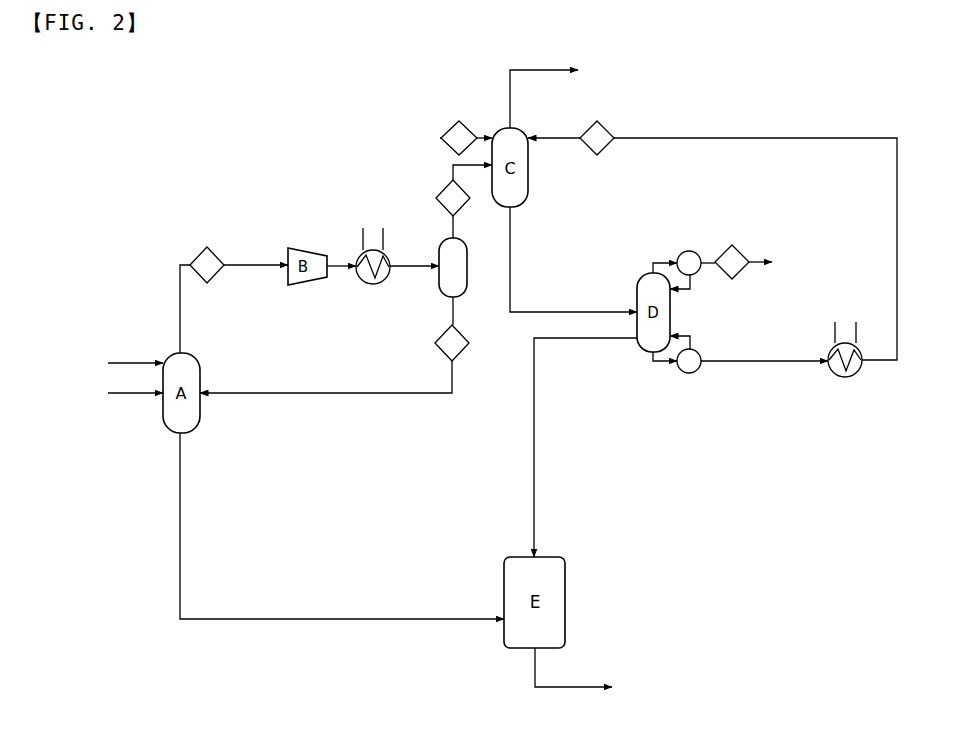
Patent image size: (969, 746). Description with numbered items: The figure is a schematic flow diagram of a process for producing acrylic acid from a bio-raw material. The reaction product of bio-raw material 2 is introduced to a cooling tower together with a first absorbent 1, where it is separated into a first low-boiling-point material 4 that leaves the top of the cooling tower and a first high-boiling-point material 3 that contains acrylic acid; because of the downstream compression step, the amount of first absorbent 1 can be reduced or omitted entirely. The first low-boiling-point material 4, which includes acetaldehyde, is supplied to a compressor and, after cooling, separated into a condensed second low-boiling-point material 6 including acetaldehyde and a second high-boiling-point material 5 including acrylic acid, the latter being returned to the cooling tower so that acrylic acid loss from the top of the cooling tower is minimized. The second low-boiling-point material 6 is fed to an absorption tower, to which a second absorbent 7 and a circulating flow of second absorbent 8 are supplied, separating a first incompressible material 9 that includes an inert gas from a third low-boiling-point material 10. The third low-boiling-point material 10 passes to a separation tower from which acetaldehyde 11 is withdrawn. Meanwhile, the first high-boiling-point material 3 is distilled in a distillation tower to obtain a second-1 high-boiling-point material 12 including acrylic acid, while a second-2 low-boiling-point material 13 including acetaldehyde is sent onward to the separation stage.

The first absorbent 1 is at (135, 348).
The reaction product of bio-raw material 2 is at (135, 409).
The first high-boiling-point material 3 is at (342, 526).
The first low-boiling-point material 4 is at (234, 300).
The second high-boiling-point material 5 is at (334, 345).
The second low-boiling-point material 6 is at (464, 201).
The second absorbent 7 is at (466, 138).
The second absorbent (circulation flow) 8 is at (712, 240).
The first incompressible material 9 is at (555, 95).
The third low-boiling-point material 10 is at (573, 259).
The acetaldehyde 11 is at (736, 262).
The second-1 high-boiling-point material 12 is at (590, 675).
The second-2 low-boiling-point material 13 is at (585, 447).